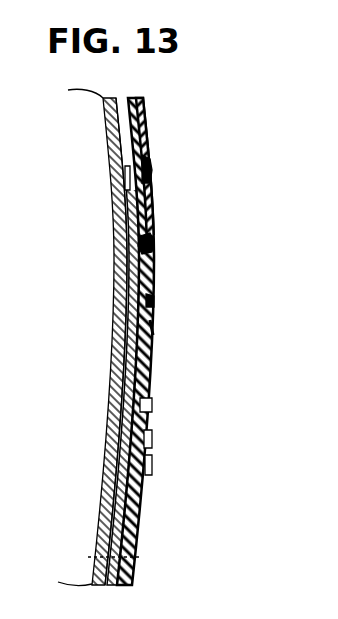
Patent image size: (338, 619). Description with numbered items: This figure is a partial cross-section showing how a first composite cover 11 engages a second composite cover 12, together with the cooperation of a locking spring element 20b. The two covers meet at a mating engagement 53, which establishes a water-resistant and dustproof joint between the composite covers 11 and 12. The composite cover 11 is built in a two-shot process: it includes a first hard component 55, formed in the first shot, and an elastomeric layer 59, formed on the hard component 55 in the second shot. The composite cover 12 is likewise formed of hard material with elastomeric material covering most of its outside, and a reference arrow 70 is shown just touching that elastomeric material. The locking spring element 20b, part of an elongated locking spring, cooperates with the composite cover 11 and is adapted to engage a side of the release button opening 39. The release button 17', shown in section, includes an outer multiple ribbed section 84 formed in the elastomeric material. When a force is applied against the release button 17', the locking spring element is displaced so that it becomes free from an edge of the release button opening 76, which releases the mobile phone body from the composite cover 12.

The composite cover 11 is at (187, 243).
The composite cover 12 is at (180, 376).
The release button 17' is at (177, 449).
The locking spring element 20b is at (117, 254).
The release button opening 39 is at (116, 203).
The mating engagement 53 is at (154, 294).
The first hard component 55 is at (153, 248).
The elastomeric layer 59 is at (150, 176).
The reference arrow 70 is at (153, 330).
The release button opening 76 is at (153, 415).
The outer multiple ribbed section 84 is at (155, 465).